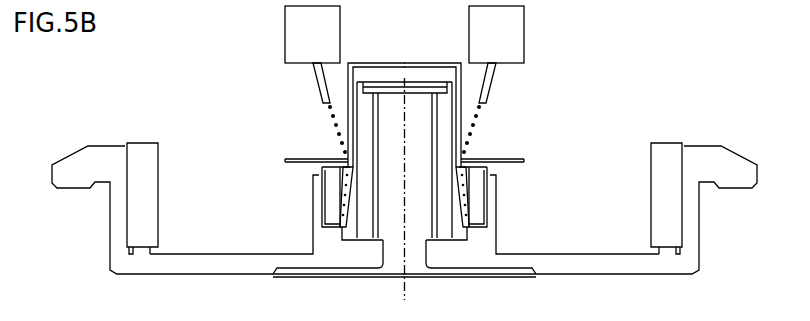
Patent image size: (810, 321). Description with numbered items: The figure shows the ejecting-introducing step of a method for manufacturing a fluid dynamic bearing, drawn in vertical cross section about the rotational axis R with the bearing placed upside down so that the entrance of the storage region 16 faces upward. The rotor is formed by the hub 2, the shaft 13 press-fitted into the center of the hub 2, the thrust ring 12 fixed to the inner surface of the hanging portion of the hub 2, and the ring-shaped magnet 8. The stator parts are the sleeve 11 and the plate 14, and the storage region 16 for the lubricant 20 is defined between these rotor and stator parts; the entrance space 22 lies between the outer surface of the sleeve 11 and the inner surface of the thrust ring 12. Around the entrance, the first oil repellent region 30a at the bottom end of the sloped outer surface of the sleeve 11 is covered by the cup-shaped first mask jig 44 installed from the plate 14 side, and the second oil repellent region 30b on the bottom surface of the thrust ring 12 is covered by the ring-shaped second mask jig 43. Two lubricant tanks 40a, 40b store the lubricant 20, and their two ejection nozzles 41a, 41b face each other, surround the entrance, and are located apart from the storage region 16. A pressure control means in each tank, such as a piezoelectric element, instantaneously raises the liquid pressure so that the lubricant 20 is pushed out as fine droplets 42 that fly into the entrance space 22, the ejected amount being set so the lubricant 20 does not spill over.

The hub 2 is at (74, 154).
The ring-shaped magnet 8 is at (153, 163).
The sleeve 11 is at (362, 82).
The thrust ring 12 is at (332, 199).
The shaft 13 is at (390, 263).
The plate 14 is at (388, 83).
The storage region 16 is at (473, 233).
The lubricant 20 is at (322, 218).
The entrance space 22 is at (465, 217).
The first oil repellent region 30a is at (350, 135).
The second oil repellent region 30b is at (322, 170).
The lubricant tank 40a is at (518, 25).
The lubricant tank 40b is at (290, 25).
The ejection nozzle 41a is at (493, 86).
The ejection nozzle 41b is at (318, 86).
The droplets 42 is at (331, 117).
The second mask jig 43 is at (285, 160).
The first mask jig 44 is at (423, 82).
The rotational axis R is at (404, 288).